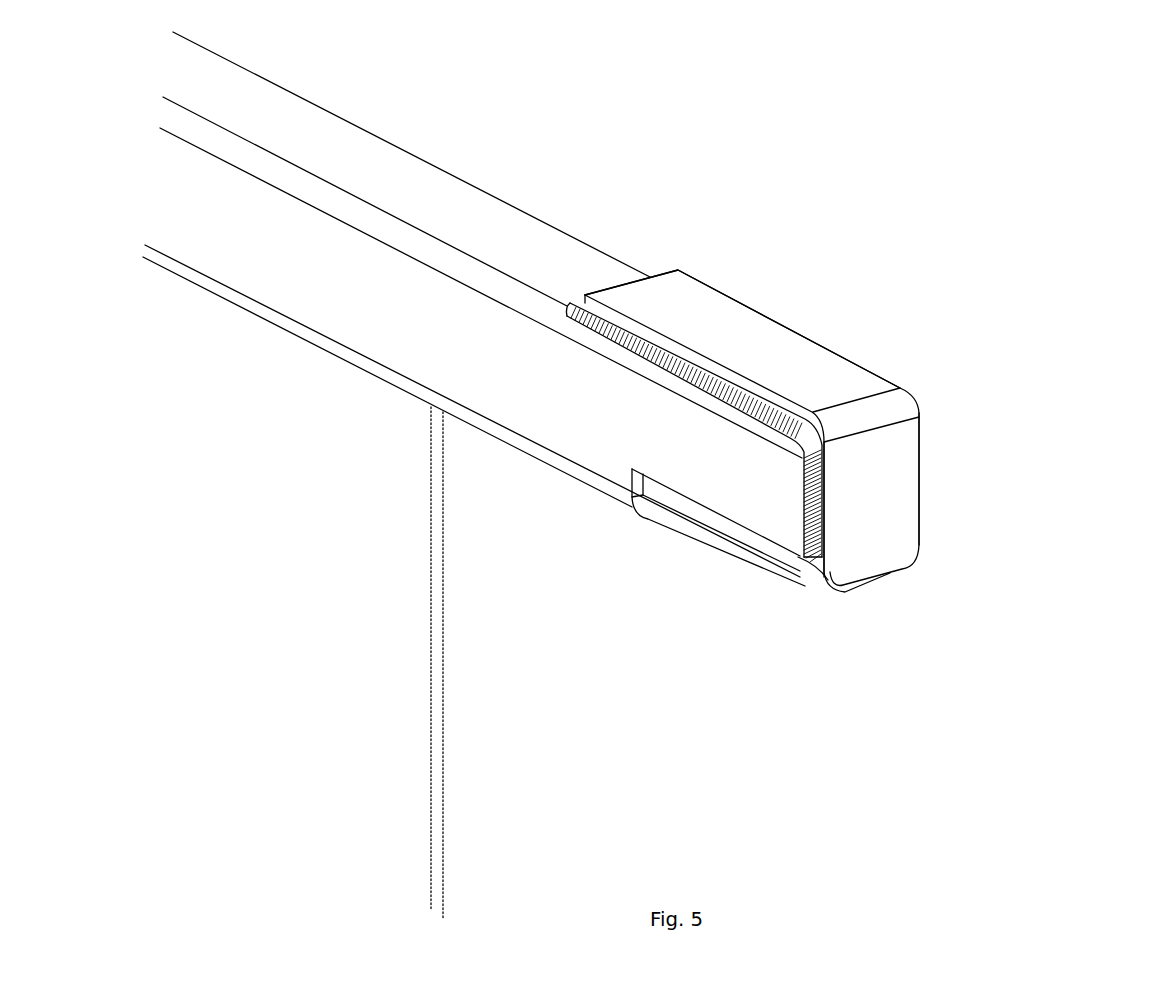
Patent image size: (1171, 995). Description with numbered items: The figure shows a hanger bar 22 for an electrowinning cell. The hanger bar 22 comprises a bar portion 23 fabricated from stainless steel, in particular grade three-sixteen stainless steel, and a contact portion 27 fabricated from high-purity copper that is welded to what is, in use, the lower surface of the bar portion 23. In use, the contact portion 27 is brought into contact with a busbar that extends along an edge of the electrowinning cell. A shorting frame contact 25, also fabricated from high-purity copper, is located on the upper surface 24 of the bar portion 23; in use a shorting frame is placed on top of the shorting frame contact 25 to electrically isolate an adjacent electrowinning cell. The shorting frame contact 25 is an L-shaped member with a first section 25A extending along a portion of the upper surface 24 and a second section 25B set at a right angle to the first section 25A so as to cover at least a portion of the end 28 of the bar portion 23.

The hanger bar 22 is at (567, 488).
The bar portion 23 is at (590, 440).
The upper surface 24 is at (493, 228).
The shorting frame contact 25 is at (905, 375).
The first section 25A is at (753, 340).
The second section 25B is at (887, 498).
The contact portion 27 is at (717, 528).
The end 28 is at (799, 558).